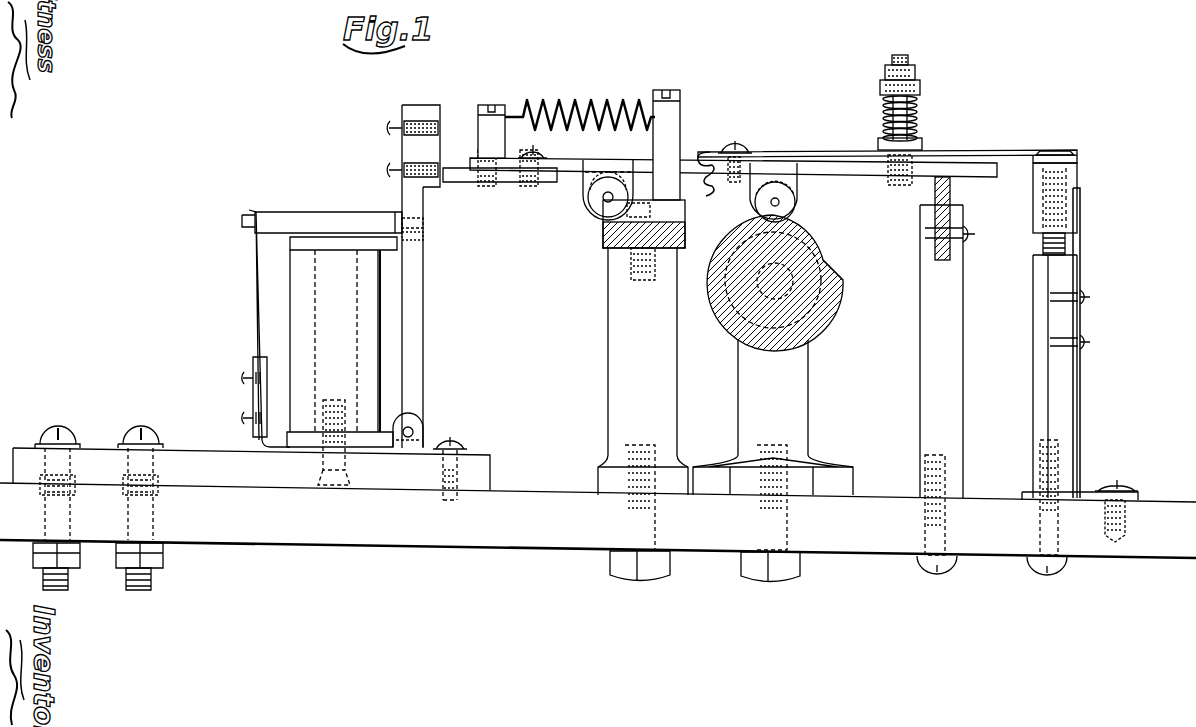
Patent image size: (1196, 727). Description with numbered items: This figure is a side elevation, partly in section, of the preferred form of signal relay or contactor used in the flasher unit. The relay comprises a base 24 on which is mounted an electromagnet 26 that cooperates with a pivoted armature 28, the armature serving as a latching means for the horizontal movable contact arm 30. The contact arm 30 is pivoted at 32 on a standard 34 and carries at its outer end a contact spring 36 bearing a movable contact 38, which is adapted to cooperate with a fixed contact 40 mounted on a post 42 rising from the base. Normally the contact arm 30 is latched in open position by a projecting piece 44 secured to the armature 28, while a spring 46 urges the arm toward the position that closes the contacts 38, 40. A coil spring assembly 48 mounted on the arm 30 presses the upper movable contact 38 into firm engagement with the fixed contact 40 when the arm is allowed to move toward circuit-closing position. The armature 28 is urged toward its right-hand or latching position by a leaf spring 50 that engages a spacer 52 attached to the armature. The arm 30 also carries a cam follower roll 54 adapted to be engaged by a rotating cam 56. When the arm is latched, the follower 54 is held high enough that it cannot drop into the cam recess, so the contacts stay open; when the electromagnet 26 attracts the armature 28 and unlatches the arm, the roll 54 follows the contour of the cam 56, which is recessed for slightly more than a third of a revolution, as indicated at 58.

The base 24 is at (390, 545).
The electromagnet 26 is at (365, 348).
The pivoted armature 28 is at (416, 299).
The horizontal movable contact arm 30 is at (570, 170).
The pivot 32 is at (608, 200).
The standard 34 is at (604, 253).
The contact spring 36 is at (995, 150).
The movable contact 38 is at (1058, 150).
The fixed contact 40 is at (1080, 157).
The post 42 is at (1063, 400).
The projecting piece 44 is at (430, 120).
The spring 46 is at (604, 104).
The coil spring assembly 48 is at (920, 128).
The leaf spring 50 is at (252, 324).
The spacer 52 is at (312, 214).
The cam follower roll 54 is at (795, 207).
The rotating cam 56 is at (788, 393).
The cam recess 58 is at (830, 248).